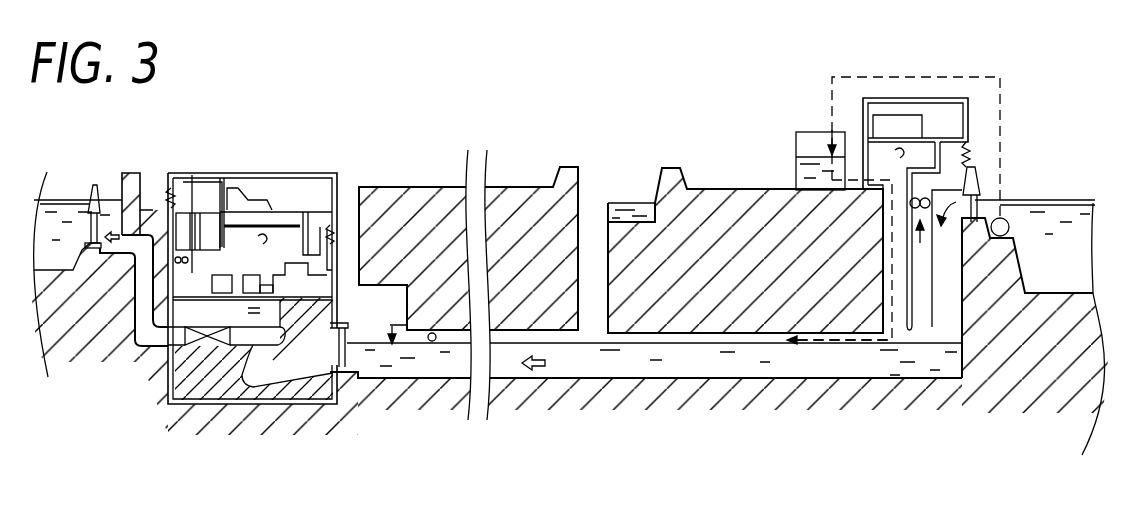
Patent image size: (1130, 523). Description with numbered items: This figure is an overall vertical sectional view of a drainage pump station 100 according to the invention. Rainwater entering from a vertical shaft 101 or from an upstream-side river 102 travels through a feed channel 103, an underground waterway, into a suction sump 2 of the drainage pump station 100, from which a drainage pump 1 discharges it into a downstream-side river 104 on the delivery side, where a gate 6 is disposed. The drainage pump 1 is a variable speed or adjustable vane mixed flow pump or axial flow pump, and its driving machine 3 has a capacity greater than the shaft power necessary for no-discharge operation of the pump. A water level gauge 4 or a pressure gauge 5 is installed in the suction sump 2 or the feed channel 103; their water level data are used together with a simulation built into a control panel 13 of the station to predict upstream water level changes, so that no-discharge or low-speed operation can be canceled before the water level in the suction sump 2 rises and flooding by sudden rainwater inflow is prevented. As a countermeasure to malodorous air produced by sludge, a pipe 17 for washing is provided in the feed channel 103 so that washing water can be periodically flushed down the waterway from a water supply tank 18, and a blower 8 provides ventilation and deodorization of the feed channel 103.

The drainage pump 1 is at (251, 335).
The suction sump 2 is at (365, 352).
The driving machine 3 is at (295, 262).
The water level gauge 4 is at (393, 352).
The pressure gauge 5 is at (426, 350).
The gate 6 is at (95, 183).
The blower 8 is at (180, 176).
The control panel 13 is at (258, 205).
The pipe for washing 17 is at (840, 352).
The water supply tank 18 is at (796, 180).
The drainage pump station 100 is at (192, 385).
The vertical shaft 101 is at (593, 214).
The upstream-side river 102 is at (1040, 225).
The feed channel 103 is at (662, 363).
The downstream-side river 104 is at (62, 218).